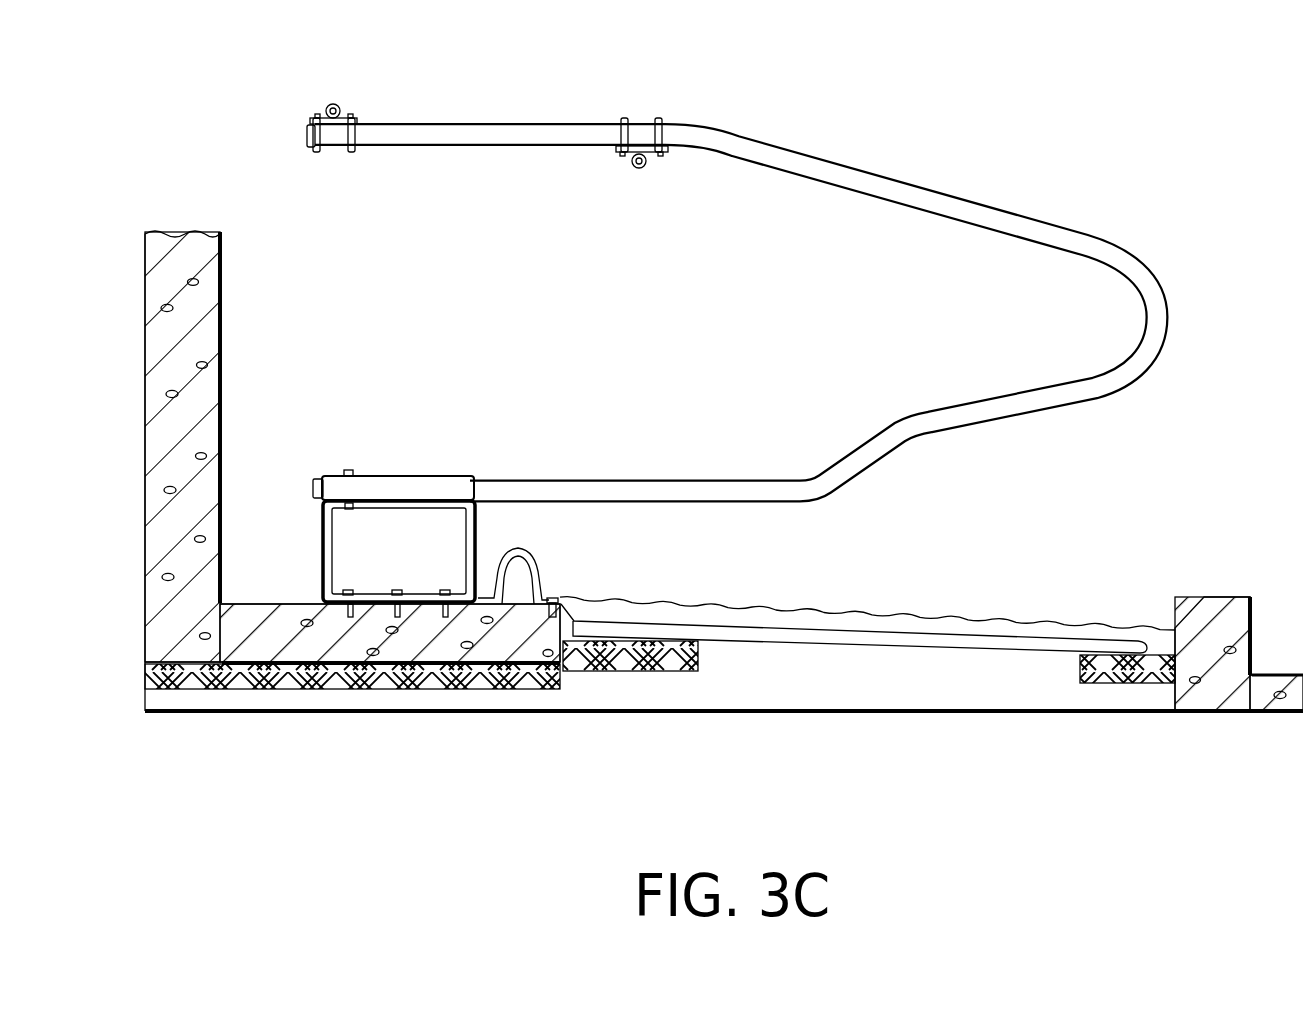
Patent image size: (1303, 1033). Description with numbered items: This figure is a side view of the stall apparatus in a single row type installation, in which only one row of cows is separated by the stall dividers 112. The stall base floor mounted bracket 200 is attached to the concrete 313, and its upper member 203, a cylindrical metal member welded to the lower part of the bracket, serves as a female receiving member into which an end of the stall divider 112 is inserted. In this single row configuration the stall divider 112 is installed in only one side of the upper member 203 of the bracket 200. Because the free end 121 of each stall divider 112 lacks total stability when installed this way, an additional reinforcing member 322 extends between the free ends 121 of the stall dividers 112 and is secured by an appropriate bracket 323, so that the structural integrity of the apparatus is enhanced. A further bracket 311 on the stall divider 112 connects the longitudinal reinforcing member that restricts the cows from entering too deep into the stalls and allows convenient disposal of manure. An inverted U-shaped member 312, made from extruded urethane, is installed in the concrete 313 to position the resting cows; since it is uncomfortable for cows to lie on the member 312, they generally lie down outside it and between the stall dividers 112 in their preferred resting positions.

The stall divider 112 is at (925, 190).
The free end 121 is at (306, 130).
The stall base floor mounted bracket 200 is at (488, 532).
The upper member 203 is at (410, 478).
The bracket 311 is at (664, 156).
The inverted U-shaped member 312 is at (536, 560).
The concrete 313 is at (482, 667).
The reinforcing member 322 is at (339, 104).
The bracket 323 is at (365, 132).